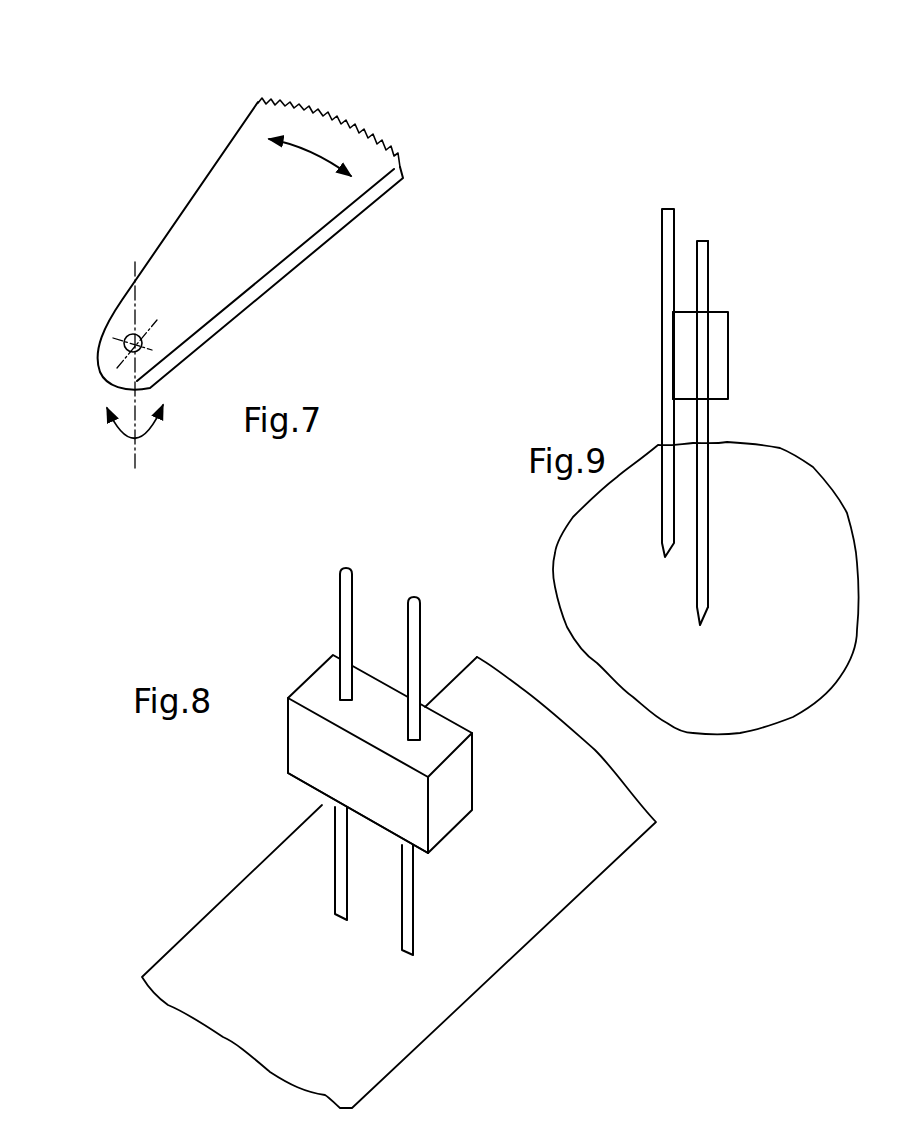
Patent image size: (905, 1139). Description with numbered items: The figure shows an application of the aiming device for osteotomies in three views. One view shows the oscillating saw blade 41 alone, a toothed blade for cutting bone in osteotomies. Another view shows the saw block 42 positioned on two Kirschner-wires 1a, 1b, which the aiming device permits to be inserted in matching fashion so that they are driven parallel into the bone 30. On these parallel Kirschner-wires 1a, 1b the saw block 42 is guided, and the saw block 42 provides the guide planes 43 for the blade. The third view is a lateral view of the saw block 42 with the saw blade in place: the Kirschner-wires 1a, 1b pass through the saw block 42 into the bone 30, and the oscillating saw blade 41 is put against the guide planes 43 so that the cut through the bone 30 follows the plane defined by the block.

In FIG. 7, the oscillating saw blade 41 is at (275, 245).
In FIG. 9, the oscillating saw blade 41 is at (665, 257).
In FIG. 8, the Kirschner-wire 1a is at (338, 590).
In FIG. 9, the Kirschner-wire 1a is at (708, 262).
In FIG. 8, the Kirschner-wire 1b is at (422, 612).
In FIG. 9, the Kirschner-wire 1b is at (708, 265).
In FIG. 8, the saw block 42 is at (315, 745).
In FIG. 9, the saw block 42 is at (685, 355).
In FIG. 8, the guide plane 43 is at (337, 767).
In FIG. 9, the guide plane 43 is at (672, 379).
In FIG. 8, the bone 30 is at (511, 922).
In FIG. 9, the bone 30 is at (760, 702).